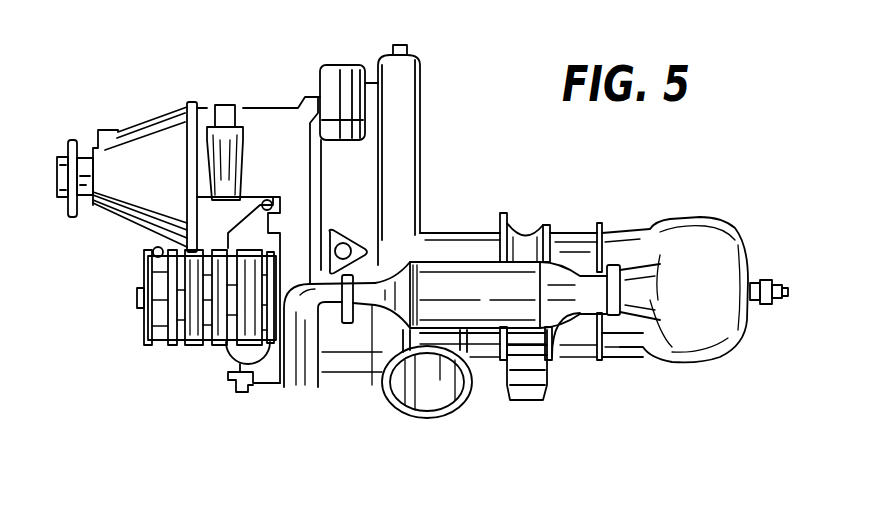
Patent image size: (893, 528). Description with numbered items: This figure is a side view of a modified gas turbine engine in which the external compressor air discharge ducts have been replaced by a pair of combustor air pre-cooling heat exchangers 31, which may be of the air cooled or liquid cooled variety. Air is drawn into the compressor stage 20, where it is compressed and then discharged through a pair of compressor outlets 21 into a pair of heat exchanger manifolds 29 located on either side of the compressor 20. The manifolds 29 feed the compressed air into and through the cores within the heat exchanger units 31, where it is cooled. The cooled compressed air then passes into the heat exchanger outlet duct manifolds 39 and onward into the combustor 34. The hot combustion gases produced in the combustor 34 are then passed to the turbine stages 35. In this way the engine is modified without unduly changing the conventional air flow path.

The compressor stage 20 is at (192, 345).
The compressor outlets 21 is at (302, 383).
The heat exchanger manifolds 29 is at (385, 310).
The combustor air pre-cooling heat exchanger 31 is at (470, 258).
The turbine stages 35 is at (520, 224).
The combustor 34 is at (733, 240).
The heat exchanger outlet duct manifolds 39 is at (560, 317).